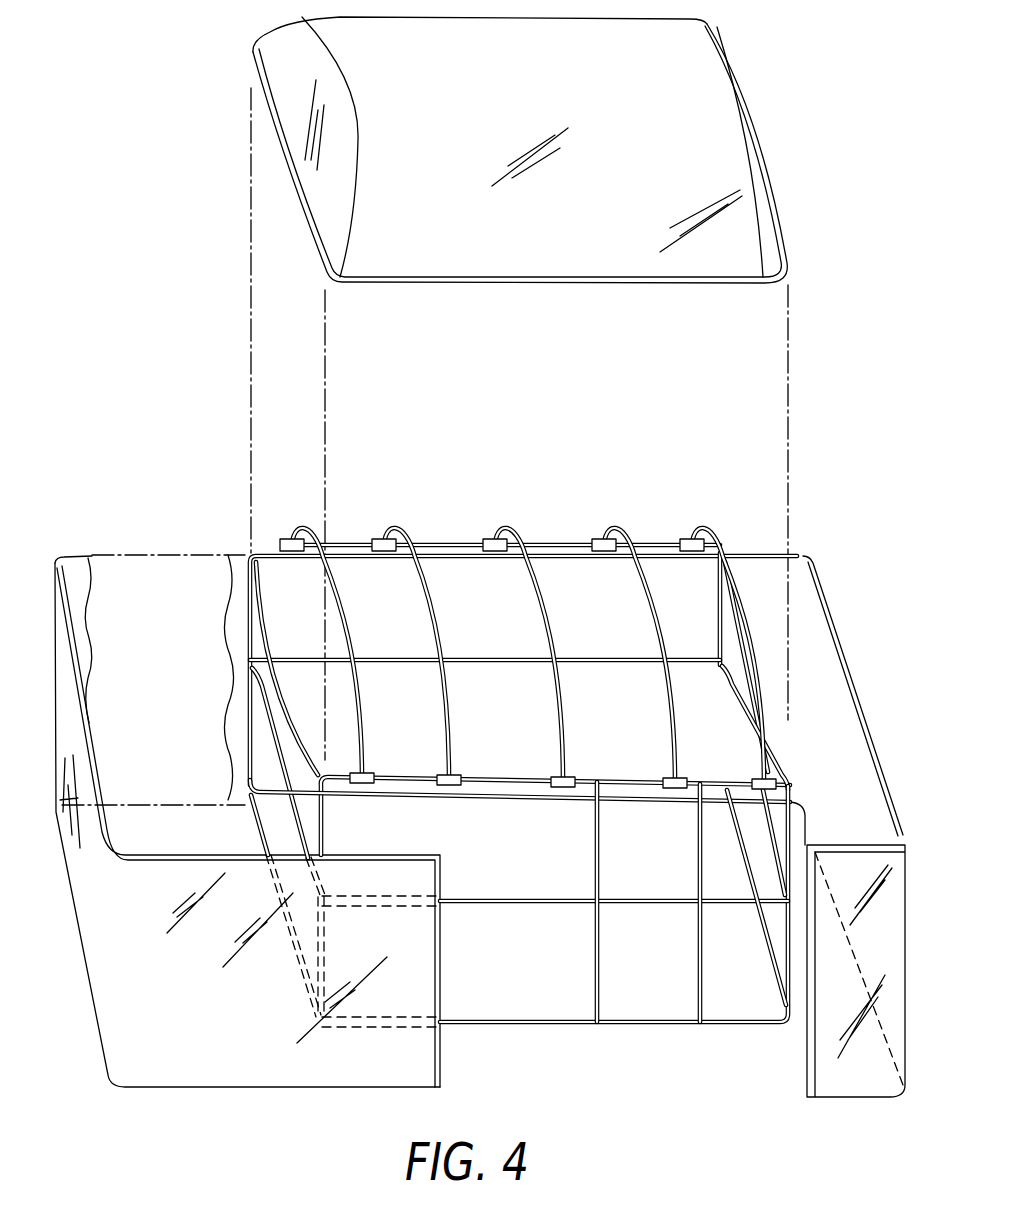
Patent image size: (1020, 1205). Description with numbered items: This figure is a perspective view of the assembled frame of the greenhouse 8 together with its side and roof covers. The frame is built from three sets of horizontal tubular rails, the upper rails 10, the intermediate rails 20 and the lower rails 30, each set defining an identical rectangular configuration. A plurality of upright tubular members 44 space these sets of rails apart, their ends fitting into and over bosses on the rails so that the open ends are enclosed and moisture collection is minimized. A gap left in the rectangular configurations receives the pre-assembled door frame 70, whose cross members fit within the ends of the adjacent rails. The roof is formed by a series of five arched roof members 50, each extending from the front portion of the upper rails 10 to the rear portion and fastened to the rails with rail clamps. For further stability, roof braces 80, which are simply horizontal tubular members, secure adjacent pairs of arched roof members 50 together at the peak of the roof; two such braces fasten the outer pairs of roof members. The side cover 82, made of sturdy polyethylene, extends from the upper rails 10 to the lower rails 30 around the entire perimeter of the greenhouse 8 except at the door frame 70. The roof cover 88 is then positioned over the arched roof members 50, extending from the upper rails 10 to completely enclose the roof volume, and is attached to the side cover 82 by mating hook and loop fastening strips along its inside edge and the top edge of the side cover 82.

The greenhouse 8 is at (134, 504).
The upper rails 10 is at (265, 618).
The intermediate rails 20 is at (262, 720).
The lower rails 30 is at (260, 840).
The upright tubular members 44 is at (255, 650).
The arched roof members 50 is at (360, 612).
The door frame 70 is at (600, 968).
The roof braces 80 is at (376, 557).
The side cover 82 is at (905, 828).
The roof cover 88 is at (776, 206).